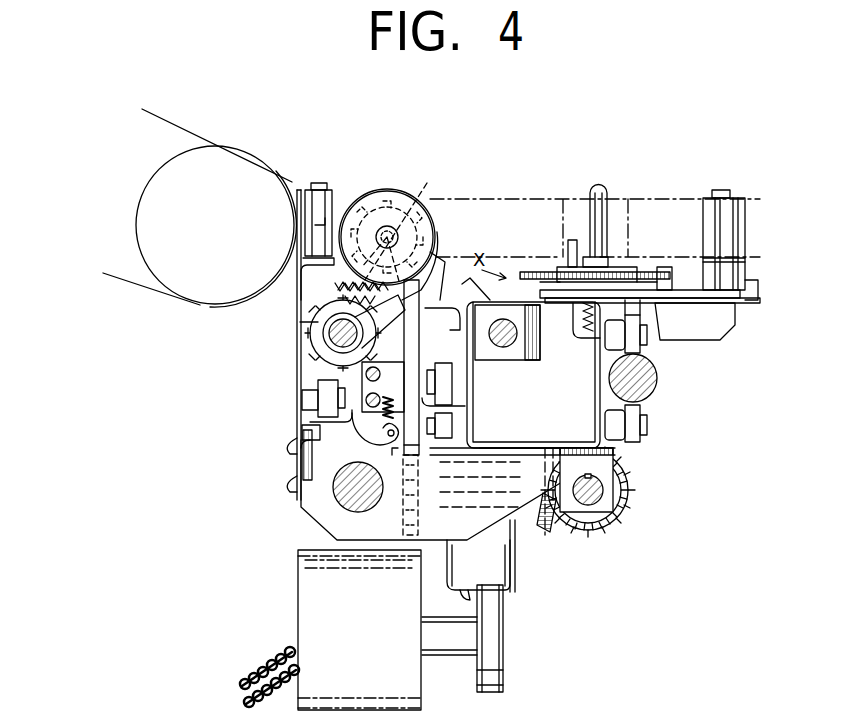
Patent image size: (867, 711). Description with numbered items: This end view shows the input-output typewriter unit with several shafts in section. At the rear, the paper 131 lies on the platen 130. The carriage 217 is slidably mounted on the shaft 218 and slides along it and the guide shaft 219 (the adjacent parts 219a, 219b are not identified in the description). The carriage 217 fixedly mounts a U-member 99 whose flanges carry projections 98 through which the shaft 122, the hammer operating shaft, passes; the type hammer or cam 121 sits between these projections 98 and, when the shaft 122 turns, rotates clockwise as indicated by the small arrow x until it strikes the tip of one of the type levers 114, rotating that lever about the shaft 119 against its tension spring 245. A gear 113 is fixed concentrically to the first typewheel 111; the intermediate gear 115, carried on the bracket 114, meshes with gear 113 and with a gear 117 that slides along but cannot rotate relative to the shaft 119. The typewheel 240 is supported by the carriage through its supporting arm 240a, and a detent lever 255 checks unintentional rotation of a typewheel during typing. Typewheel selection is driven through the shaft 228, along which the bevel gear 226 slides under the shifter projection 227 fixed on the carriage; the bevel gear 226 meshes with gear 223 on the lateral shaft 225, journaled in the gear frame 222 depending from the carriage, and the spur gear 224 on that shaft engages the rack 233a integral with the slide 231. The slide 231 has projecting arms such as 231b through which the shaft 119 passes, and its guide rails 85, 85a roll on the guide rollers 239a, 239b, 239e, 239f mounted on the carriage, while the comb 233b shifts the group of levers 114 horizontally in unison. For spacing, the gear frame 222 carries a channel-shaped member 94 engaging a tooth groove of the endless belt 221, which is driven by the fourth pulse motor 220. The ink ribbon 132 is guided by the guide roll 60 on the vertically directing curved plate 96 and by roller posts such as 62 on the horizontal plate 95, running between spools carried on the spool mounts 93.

The platen 130 is at (180, 192).
The paper 131 is at (212, 144).
The guide roll 60 is at (310, 190).
The typewheel 240 is at (320, 225).
The first typewheel 111 is at (386, 194).
The gear 113 is at (434, 182).
The ink ribbon 132 is at (531, 198).
The roller post 62 is at (708, 200).
The spool mount 93 is at (643, 273).
The horizontally arranged plate 95 is at (748, 300).
The detent lever 255 is at (442, 264).
The type hammer 121 is at (474, 282).
The type lever 114 is at (440, 316).
The comb 233b is at (422, 324).
The U-member 99 is at (512, 397).
The shaft 122 is at (526, 354).
The projections 98 is at (522, 337).
The guide roller 239a is at (460, 374).
The movable guide rail 85 is at (464, 406).
The guide roller 239b is at (462, 424).
The bearing 219a is at (641, 352).
The guide shaft 219 is at (650, 380).
The bearing 219b is at (638, 438).
The intermediate gear 115 is at (306, 306).
The rotatable shaft 119 is at (306, 342).
The gear 117 is at (304, 356).
The vertically directing curved plate 96 is at (304, 373).
The projecting arm 231b is at (302, 325).
The slide 231 is at (344, 383).
The guide roller 239e is at (302, 400).
The supporting arm 240a is at (306, 418).
The movable guide rail 85a is at (302, 438).
The guide roller 239f is at (298, 469).
The carriage 217 is at (314, 509).
The shaft 218 is at (326, 525).
The spur gear 224 is at (346, 504).
The tension spring 245 is at (397, 448).
The rack 233a is at (420, 462).
The shifter projection 227 is at (614, 474).
The bevel gear 226 is at (606, 516).
The shaft 228 is at (604, 492).
The gear 223 is at (546, 523).
The lateral shaft 225 is at (512, 548).
The gear frame 222 is at (508, 572).
The channel-shaped member 94 is at (506, 590).
The endless belt 221 is at (504, 678).
The fourth pulse motor 220 is at (298, 618).